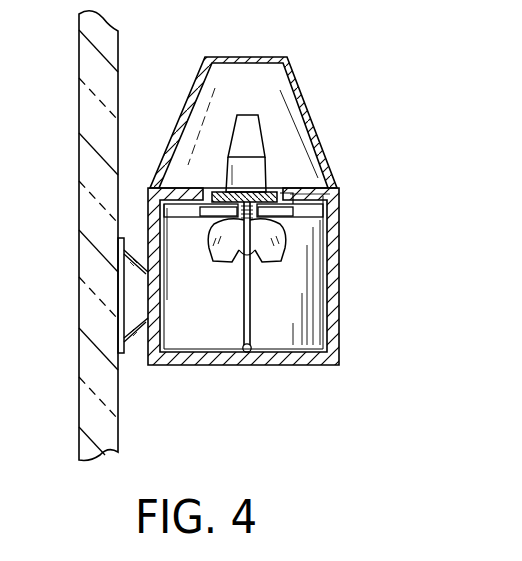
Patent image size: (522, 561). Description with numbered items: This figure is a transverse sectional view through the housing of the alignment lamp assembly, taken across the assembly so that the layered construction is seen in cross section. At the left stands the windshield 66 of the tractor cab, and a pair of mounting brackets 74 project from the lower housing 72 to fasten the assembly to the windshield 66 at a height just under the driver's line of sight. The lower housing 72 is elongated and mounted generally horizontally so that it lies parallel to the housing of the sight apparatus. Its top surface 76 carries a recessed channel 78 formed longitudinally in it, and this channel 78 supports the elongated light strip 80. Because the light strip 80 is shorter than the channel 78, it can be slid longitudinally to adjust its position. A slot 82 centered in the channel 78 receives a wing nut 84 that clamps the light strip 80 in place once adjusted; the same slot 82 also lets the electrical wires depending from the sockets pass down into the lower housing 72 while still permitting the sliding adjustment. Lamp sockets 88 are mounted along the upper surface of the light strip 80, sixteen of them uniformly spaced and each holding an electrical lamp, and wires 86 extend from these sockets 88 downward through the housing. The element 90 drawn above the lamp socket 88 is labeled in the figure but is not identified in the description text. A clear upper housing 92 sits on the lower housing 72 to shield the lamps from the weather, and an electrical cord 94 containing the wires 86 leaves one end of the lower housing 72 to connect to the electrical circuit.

The windshield 66 is at (85, 349).
The lower housing 72 is at (342, 318).
The mounting brackets 74 is at (128, 330).
The top surface 76 is at (308, 192).
The recessed channel 78 is at (280, 216).
The light strip 80 is at (276, 191).
The slot 82 is at (237, 204).
The wing nut 84 is at (219, 261).
The wires 86 is at (251, 302).
The lamp sockets 88 is at (254, 167).
The knob cap 90 is at (258, 127).
The clear upper housing 92 is at (291, 73).
The electrical cord 94 is at (252, 348).